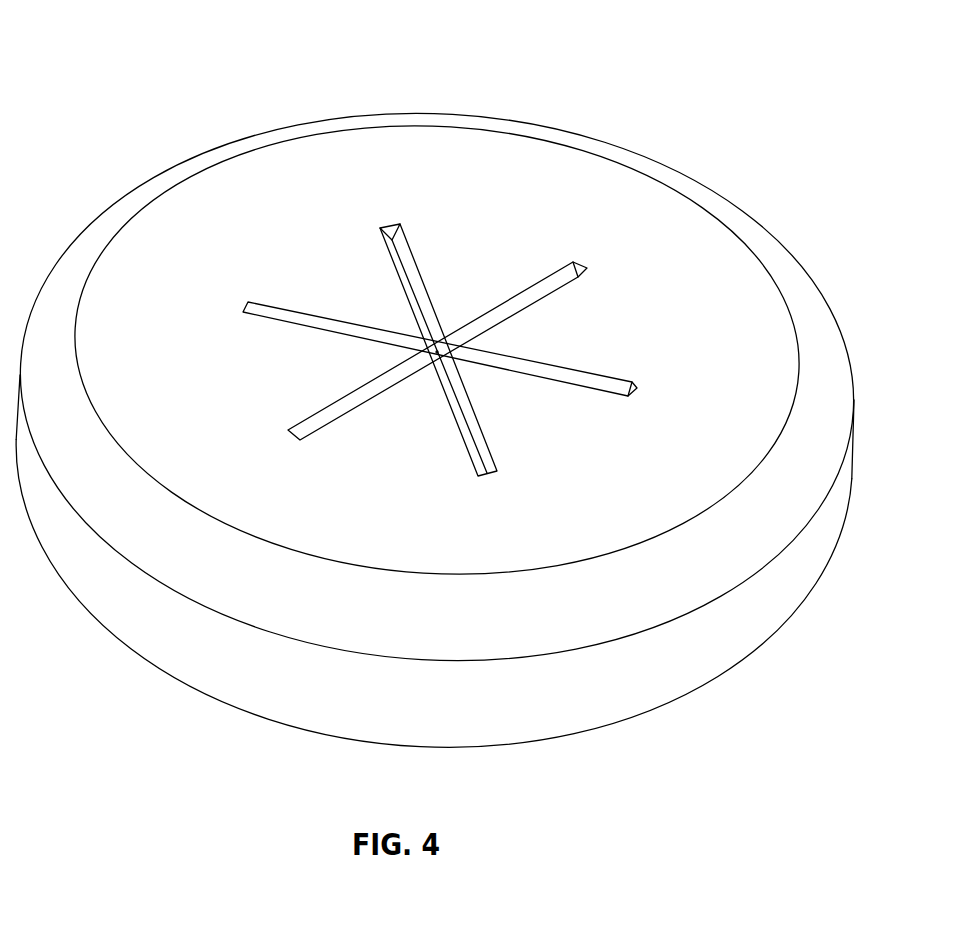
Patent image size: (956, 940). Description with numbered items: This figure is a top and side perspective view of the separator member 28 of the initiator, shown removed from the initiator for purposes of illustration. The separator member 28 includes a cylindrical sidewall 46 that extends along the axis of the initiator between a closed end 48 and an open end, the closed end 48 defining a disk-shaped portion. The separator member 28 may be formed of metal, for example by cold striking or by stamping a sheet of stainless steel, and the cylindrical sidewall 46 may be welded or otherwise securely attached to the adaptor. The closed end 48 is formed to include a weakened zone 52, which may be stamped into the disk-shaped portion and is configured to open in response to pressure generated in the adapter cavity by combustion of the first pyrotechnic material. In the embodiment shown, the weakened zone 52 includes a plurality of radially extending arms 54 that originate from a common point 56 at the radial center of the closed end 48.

The separator member 28 is at (138, 89).
The cylindrical sidewall 46 is at (280, 703).
The closed end 48 is at (260, 473).
The weakened zone 52 is at (509, 293).
The radially extending arms 54 is at (591, 376).
The common point 56 is at (437, 360).